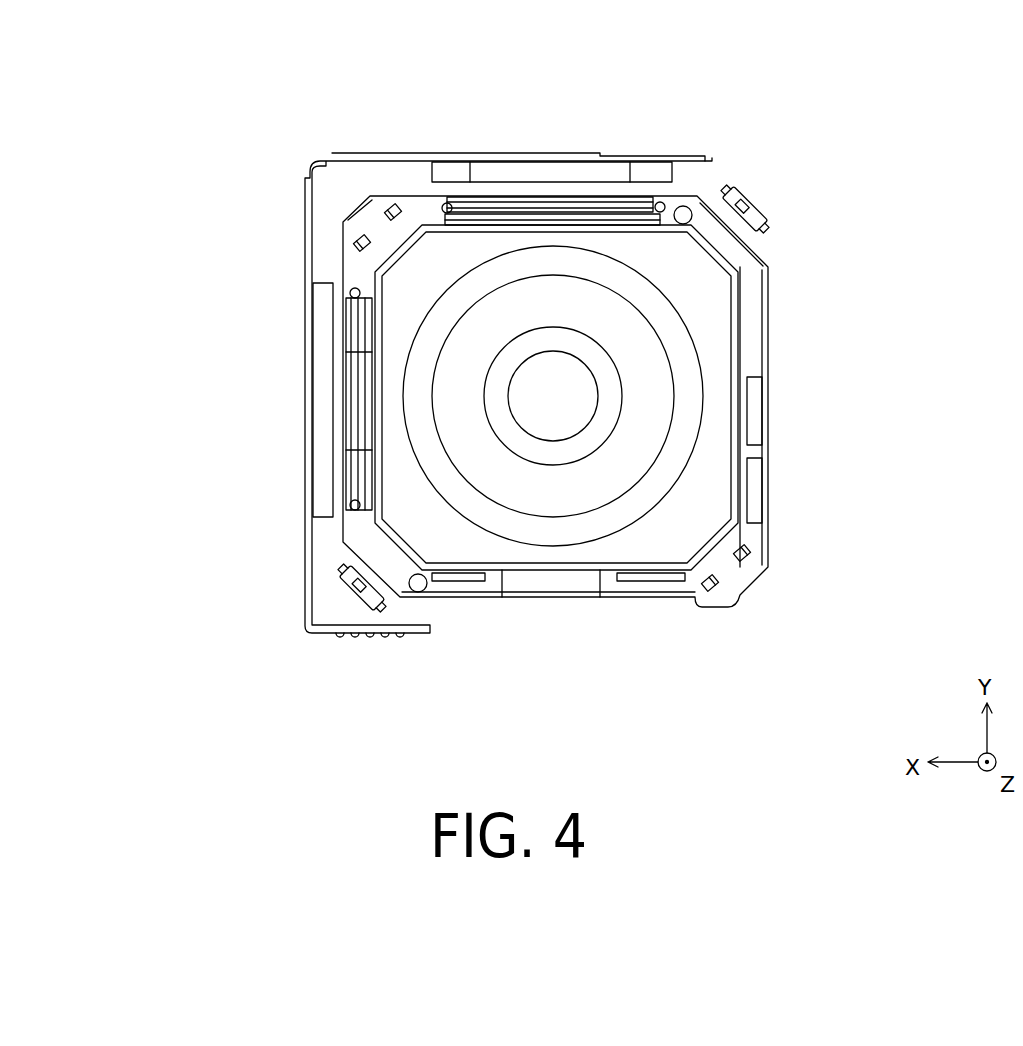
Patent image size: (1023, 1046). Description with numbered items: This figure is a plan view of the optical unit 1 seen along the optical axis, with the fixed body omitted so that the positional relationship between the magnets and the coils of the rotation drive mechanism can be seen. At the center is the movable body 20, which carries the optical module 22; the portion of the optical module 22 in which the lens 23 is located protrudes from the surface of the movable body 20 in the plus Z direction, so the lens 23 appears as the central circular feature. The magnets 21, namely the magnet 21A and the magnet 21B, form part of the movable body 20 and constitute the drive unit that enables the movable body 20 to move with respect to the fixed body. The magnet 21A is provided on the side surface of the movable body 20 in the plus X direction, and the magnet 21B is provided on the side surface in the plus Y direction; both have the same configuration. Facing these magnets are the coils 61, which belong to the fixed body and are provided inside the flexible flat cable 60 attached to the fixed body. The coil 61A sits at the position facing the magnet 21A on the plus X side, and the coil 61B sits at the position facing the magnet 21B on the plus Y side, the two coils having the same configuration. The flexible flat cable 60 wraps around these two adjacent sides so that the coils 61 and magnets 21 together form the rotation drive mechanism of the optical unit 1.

The optical unit 1 is at (930, 91).
The movable body 20 is at (712, 478).
The magnets 21 is at (411, 283).
The magnet 21A is at (340, 400).
The magnet 21B is at (540, 194).
The optical module 22 is at (684, 320).
The lens 23 is at (572, 398).
The flexible flat cable 60 is at (365, 153).
The coils 61 is at (426, 298).
The coil 61A is at (322, 345).
The coil 61B is at (610, 172).